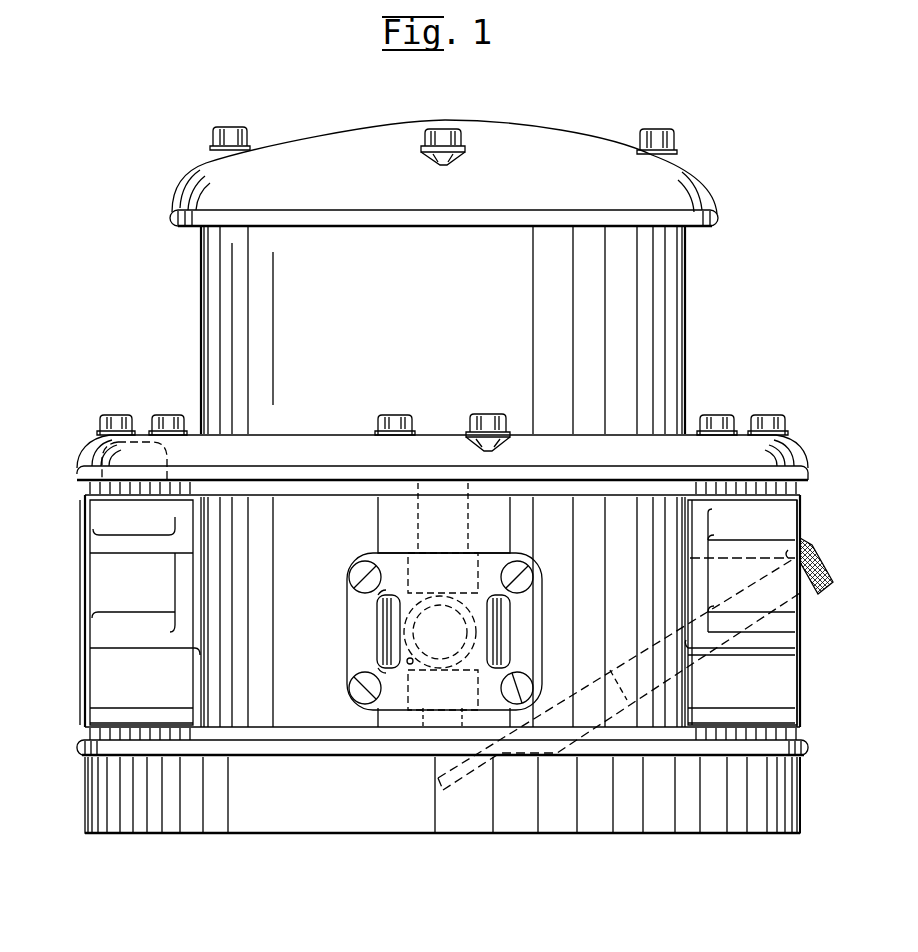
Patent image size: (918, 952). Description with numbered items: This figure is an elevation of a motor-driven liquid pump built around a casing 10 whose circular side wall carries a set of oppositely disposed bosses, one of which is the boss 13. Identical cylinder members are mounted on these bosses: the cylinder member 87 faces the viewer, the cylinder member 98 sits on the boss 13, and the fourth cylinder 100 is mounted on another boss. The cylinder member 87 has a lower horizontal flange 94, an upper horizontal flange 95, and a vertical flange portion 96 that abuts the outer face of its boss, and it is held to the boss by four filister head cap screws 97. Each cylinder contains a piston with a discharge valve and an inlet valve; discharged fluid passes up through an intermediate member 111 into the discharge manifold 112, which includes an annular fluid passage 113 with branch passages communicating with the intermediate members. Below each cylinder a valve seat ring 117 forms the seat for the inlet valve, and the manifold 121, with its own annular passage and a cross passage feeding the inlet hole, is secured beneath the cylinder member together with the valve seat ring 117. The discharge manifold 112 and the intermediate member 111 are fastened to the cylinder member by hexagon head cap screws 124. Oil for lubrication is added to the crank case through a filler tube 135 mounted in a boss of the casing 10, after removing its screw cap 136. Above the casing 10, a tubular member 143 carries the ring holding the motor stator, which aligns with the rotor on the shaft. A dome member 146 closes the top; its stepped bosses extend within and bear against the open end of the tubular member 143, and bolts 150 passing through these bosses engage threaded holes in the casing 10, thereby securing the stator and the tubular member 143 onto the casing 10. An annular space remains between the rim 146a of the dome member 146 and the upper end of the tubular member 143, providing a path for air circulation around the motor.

The casing 10 is at (198, 509).
The boss 13 is at (689, 660).
The cylinder member 87 is at (493, 573).
The lower horizontal flange 94 is at (382, 670).
The upper horizontal flange 95 is at (378, 596).
The vertical flange portion 96 is at (378, 631).
The filister head cap screws 97 is at (351, 566).
The cylinder member 98 is at (760, 640).
The fourth cylinder 100 is at (105, 632).
The intermediate member 111 is at (105, 521).
The discharge manifold 112 is at (791, 456).
The annular fluid passage 113 is at (163, 455).
The valve seat ring 117 is at (791, 712).
The manifold 121 is at (801, 779).
The hexagon head cap screws 124 is at (112, 420).
The filler tube 135 is at (803, 597).
The screw cap 136 is at (810, 557).
The tubular member 143 is at (687, 330).
The dome member 146 is at (546, 130).
The rim 146a is at (175, 221).
The bolts 150 is at (231, 136).